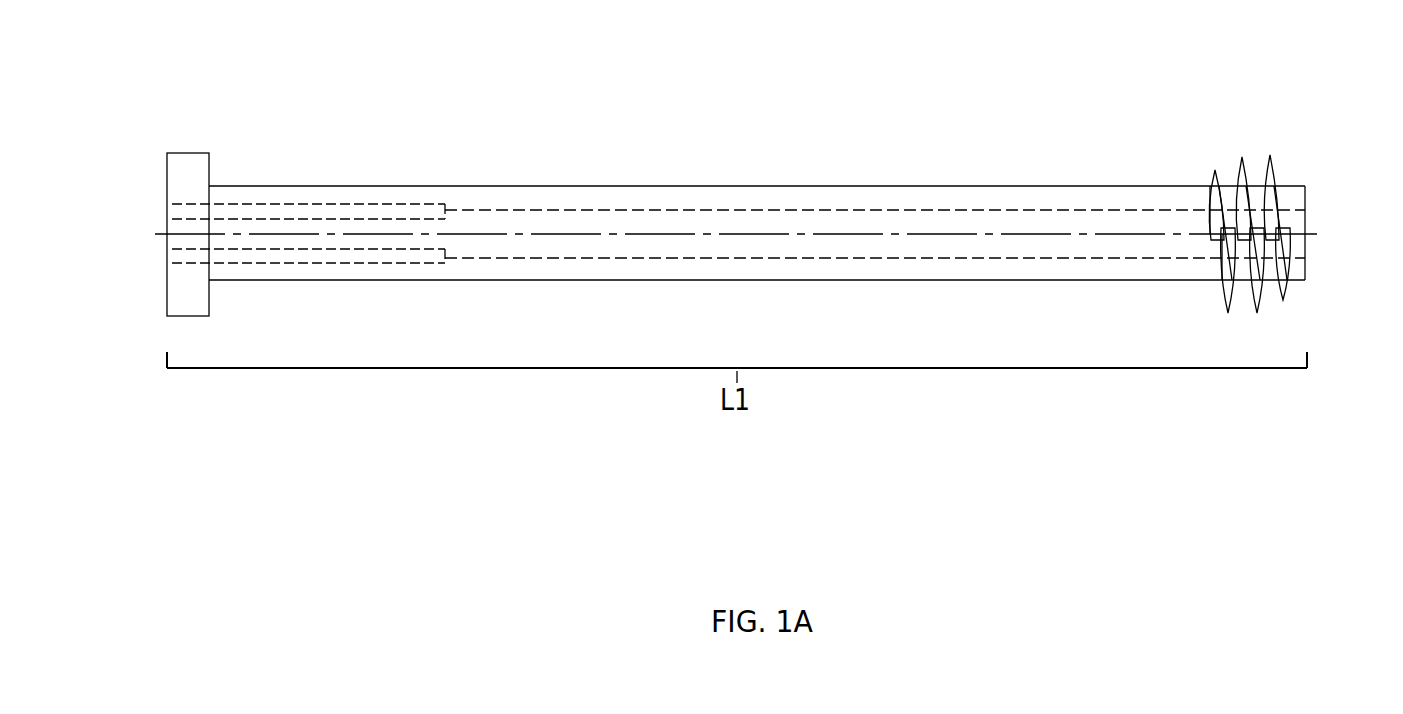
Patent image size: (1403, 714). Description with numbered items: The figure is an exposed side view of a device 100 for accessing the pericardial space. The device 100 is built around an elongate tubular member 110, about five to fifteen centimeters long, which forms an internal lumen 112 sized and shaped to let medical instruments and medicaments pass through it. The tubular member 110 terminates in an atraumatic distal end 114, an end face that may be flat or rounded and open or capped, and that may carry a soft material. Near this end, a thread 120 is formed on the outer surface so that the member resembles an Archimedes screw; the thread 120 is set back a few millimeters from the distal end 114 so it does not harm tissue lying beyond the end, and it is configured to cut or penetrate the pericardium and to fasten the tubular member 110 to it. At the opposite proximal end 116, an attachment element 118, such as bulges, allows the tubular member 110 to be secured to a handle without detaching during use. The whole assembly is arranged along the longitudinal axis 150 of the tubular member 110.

The device for accessing a pericardial space 100 is at (806, 137).
The tubular member 110 is at (746, 186).
The lumen 112 is at (838, 240).
The atraumatic distal end 114 is at (1307, 213).
The proximal end 116 is at (172, 223).
The attachment element 118 is at (193, 162).
The thread 120 is at (1238, 160).
The longitudinal axis 150 is at (155, 238).